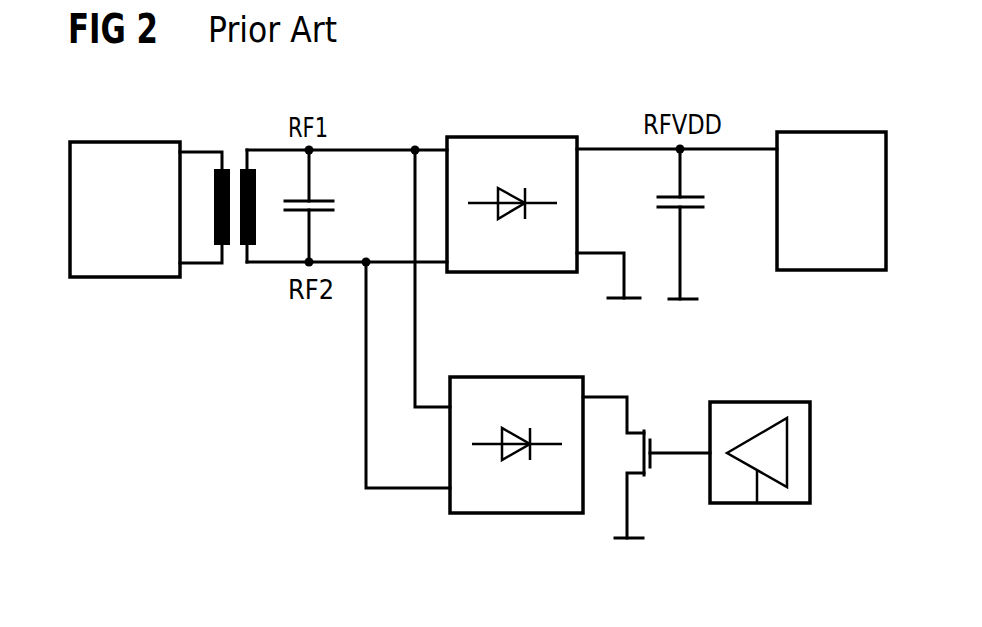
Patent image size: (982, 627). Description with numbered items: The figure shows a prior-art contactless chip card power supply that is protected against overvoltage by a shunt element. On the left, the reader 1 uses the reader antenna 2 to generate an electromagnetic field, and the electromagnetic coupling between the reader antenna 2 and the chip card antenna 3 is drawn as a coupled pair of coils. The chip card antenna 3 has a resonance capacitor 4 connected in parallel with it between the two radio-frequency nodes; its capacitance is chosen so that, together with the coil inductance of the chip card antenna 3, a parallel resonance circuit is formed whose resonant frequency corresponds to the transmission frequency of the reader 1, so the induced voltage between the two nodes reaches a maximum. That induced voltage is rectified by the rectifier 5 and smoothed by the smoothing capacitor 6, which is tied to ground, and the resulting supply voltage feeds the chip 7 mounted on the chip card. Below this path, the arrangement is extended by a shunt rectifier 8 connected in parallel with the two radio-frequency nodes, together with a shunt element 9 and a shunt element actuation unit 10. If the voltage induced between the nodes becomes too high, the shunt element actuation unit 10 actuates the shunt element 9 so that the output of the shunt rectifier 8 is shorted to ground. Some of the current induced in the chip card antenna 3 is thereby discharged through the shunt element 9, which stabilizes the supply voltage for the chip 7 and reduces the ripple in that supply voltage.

The reader 1 is at (120, 142).
The reader antenna 2 is at (205, 190).
The chip card antenna 3 is at (252, 190).
The resonance capacitor 4 is at (333, 207).
The rectifier 5 is at (500, 136).
The smoothing capacitor 6 is at (703, 203).
The chip 7 is at (830, 131).
The shunt rectifier 8 is at (505, 376).
The shunt element 9 is at (644, 432).
The shunt element actuation unit 10 is at (760, 401).